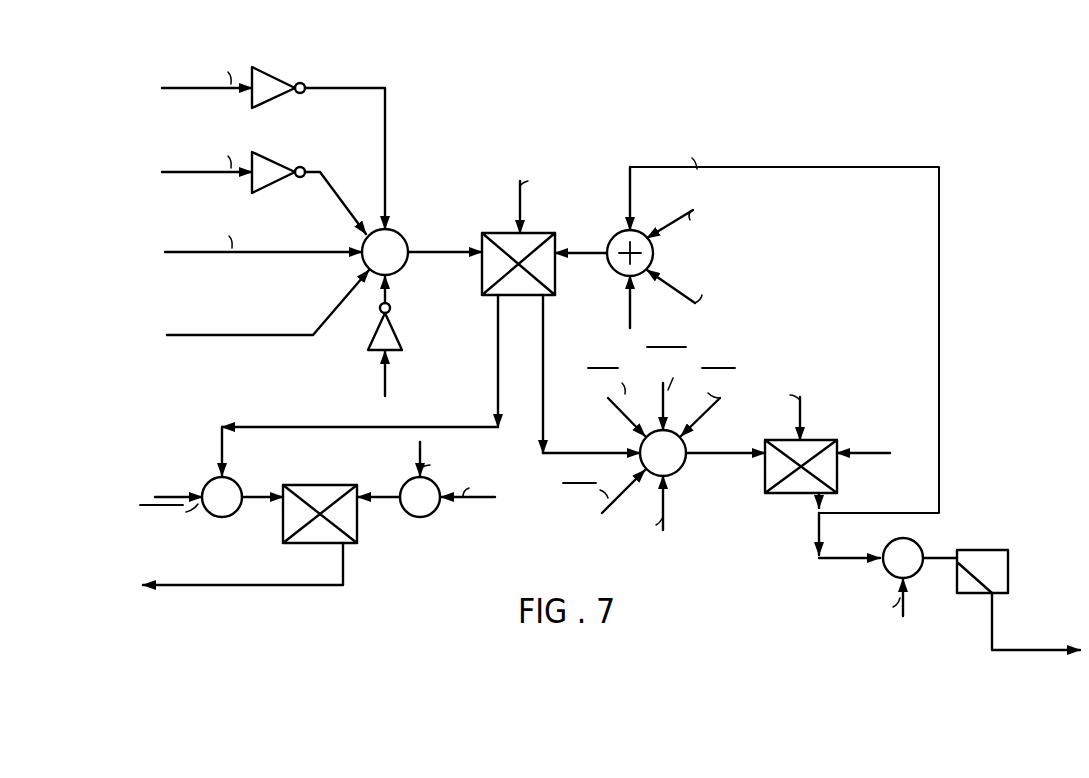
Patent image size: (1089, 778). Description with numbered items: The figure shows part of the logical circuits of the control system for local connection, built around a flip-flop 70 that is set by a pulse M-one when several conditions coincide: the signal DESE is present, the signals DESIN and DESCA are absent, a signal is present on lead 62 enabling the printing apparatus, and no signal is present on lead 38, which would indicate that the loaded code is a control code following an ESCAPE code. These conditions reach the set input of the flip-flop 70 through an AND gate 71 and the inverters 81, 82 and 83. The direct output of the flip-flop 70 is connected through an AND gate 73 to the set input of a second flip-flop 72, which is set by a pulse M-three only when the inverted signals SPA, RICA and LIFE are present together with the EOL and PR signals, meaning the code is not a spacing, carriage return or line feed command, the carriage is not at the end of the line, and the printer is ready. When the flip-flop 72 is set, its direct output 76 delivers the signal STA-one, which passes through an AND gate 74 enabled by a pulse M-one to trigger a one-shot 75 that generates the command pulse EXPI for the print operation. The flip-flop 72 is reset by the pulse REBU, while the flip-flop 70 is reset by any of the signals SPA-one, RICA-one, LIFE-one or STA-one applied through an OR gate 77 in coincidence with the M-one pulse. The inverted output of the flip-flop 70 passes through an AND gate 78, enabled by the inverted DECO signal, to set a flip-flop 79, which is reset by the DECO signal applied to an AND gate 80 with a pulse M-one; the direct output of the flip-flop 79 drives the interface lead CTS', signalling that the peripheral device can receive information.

The inverter 81 is at (279, 80).
The inverter 82 is at (277, 166).
The AND gate 71 is at (405, 268).
The lead 62 is at (211, 329).
The inverter 83 is at (398, 331).
The lead 38 is at (386, 385).
The flip-flop 70 is at (542, 233).
The OR gate 77 is at (614, 273).
The AND gate 73 is at (679, 472).
The second flip-flop 72 is at (826, 439).
The direct output 76 is at (817, 532).
The AND gate 74 is at (919, 546).
The one-shot 75 is at (985, 549).
The AND gate 78 is at (237, 481).
The flip-flop 79 is at (316, 484).
The AND gate 80 is at (432, 513).